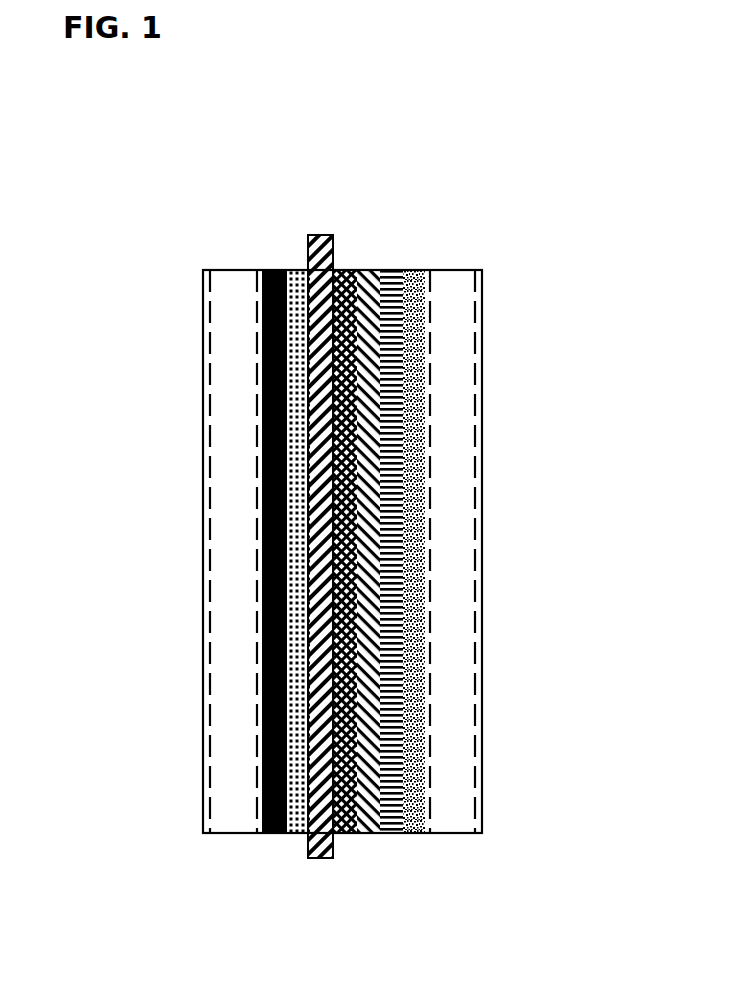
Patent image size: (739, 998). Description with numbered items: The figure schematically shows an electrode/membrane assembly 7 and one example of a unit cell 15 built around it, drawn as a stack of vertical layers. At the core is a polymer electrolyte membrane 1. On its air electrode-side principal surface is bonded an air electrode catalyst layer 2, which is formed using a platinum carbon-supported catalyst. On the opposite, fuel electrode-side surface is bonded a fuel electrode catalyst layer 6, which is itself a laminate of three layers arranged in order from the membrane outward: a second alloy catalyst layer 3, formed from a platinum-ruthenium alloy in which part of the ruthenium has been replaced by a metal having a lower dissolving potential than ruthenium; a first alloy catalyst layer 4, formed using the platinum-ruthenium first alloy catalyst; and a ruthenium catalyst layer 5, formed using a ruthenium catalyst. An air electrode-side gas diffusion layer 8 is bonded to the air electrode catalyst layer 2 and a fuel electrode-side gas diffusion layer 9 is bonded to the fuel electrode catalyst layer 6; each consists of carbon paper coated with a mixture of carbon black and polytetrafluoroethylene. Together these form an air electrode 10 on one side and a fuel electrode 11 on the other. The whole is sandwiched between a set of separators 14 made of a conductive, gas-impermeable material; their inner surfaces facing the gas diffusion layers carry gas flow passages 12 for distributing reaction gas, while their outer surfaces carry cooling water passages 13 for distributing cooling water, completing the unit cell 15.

The polymer electrolyte membrane 1 is at (318, 235).
The air electrode catalyst layer 2 is at (295, 270).
The second alloy catalyst layer 3 is at (342, 270).
The first alloy catalyst layer 4 is at (363, 270).
The ruthenium catalyst layer 5 is at (392, 270).
The fuel electrode catalyst layer 6 is at (403, 170).
The electrode/membrane assembly 7 is at (282, 162).
The air electrode-side gas diffusion layer 8 is at (268, 270).
The fuel electrode-side gas diffusion layer 9 is at (417, 270).
The air electrode 10 is at (285, 187).
The fuel electrode 11 is at (442, 113).
The gas flow passages 12 is at (255, 835).
The cooling water passages 13 is at (207, 797).
The separators 14 is at (225, 695).
The unit cell 15 is at (517, 341).